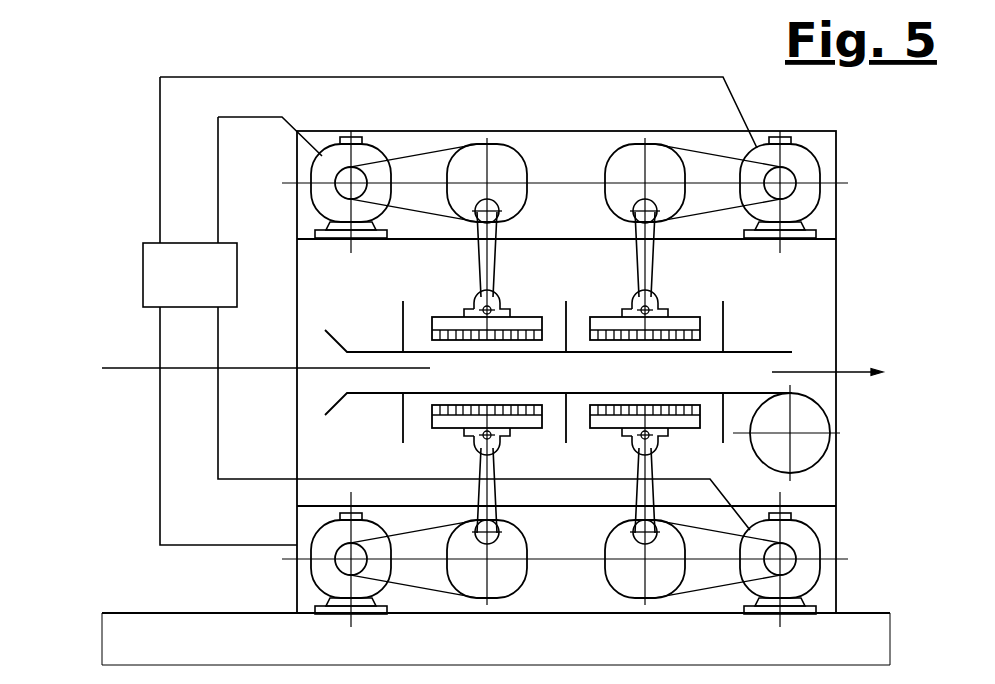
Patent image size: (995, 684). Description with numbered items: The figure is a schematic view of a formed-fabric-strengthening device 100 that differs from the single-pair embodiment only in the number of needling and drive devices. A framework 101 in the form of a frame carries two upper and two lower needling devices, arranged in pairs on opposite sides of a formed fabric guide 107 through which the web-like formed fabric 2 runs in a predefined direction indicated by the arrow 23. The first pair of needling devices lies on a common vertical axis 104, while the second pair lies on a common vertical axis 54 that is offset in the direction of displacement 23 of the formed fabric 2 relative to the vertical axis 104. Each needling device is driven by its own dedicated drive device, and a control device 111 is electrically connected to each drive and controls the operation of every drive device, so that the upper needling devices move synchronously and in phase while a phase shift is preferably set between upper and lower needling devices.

The formed-fabric-strengthening device 100 is at (144, 97).
The framework 101 is at (547, 157).
The control device 111 is at (190, 275).
The vertical axis 104 is at (478, 147).
The vertical axis 54 is at (648, 158).
The formed fabric guide 107 is at (790, 323).
The direction of displacement 23 is at (842, 372).
The formed fabric 2 is at (252, 368).